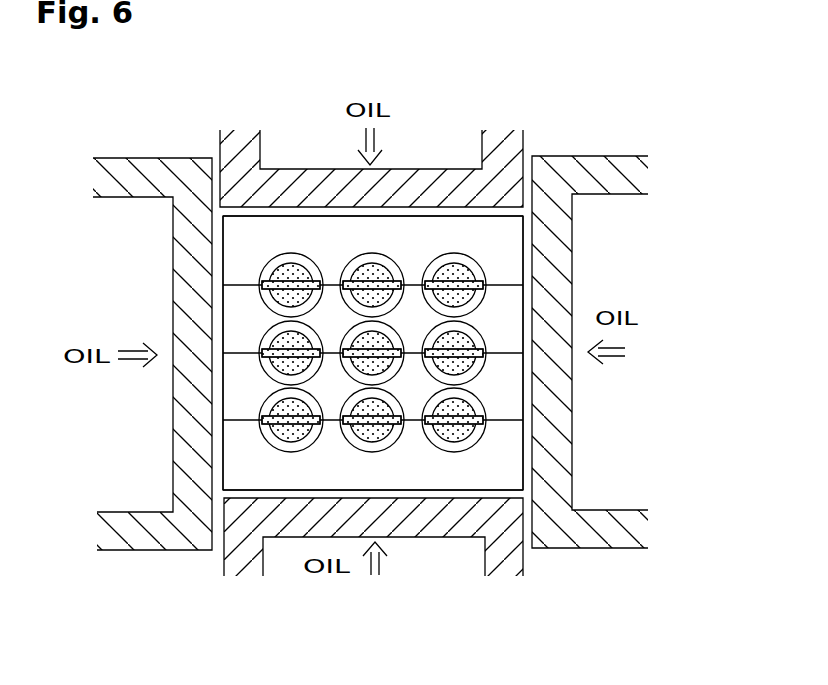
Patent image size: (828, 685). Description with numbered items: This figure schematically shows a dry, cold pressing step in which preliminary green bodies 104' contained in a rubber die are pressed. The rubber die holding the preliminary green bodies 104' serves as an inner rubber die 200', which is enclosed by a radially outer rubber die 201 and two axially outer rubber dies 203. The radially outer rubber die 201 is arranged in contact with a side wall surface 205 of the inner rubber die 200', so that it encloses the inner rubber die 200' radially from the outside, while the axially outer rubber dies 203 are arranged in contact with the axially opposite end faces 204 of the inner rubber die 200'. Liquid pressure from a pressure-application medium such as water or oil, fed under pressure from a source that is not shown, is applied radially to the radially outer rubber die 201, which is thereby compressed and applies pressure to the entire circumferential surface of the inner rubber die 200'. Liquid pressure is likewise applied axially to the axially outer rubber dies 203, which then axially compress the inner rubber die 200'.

The preliminary green bodies 104' is at (461, 346).
The inner rubber die 200' is at (449, 353).
The radially outer rubber die 201 is at (612, 167).
The axially outer rubber dies 203 is at (507, 152).
The axially opposite end faces 204 is at (457, 216).
The side wall surface 205 is at (224, 398).